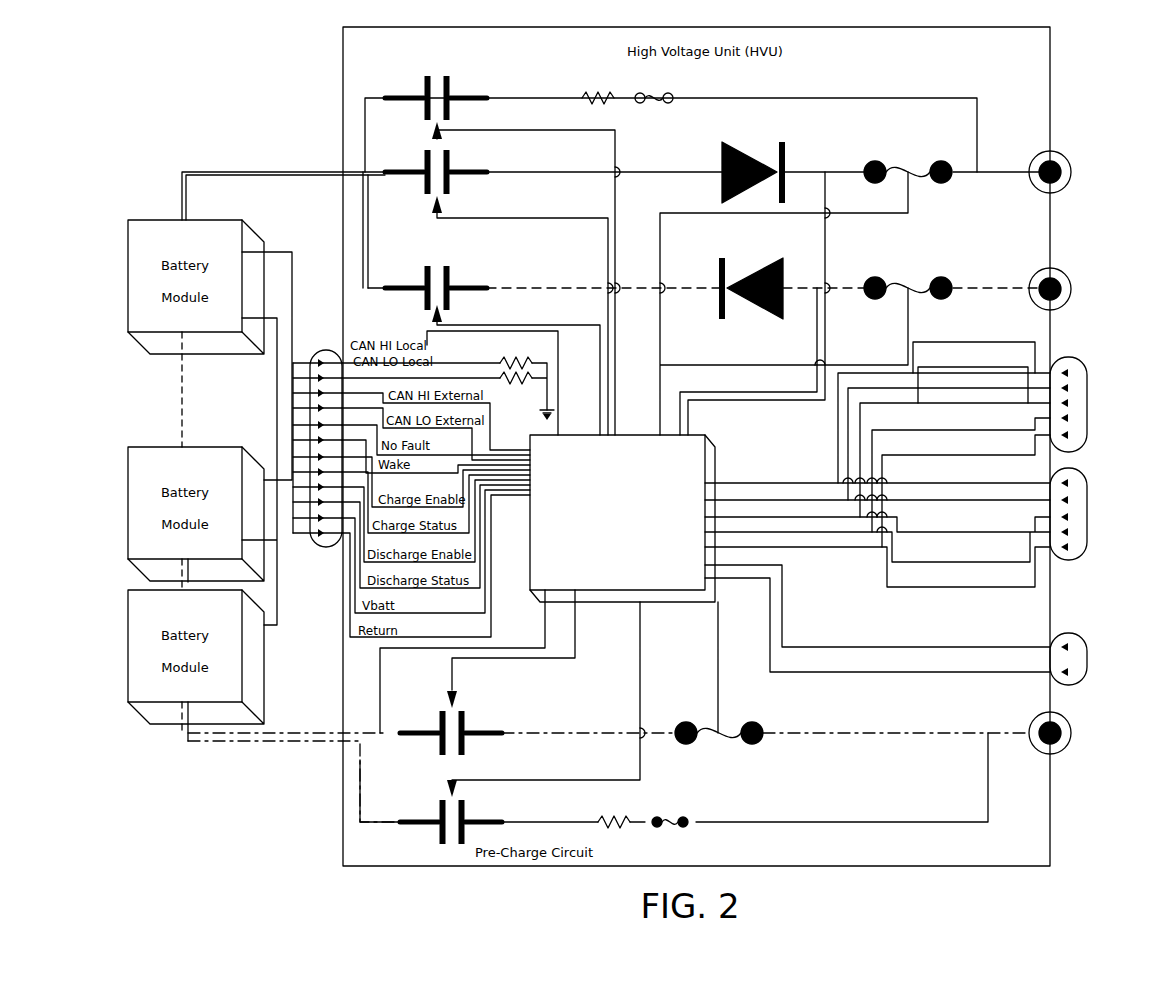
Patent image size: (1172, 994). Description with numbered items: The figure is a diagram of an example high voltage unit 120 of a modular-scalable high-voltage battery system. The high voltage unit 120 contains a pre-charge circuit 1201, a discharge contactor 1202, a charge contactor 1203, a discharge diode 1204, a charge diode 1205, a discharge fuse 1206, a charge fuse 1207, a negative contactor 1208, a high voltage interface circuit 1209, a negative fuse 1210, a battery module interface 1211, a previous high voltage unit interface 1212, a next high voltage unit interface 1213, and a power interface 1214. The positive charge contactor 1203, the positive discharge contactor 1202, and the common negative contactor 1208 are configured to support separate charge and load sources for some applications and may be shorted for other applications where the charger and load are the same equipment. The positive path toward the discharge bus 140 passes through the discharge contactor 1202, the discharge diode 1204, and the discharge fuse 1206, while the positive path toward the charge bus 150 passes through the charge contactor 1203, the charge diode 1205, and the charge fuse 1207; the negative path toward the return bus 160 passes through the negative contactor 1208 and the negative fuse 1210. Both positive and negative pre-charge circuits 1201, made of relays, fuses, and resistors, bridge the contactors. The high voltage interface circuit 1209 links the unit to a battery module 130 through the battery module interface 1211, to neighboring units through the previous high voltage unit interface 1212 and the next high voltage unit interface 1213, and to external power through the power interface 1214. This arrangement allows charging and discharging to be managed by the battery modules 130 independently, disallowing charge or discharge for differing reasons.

The high voltage unit 120 is at (203, 110).
The battery module 130 is at (128, 272).
The discharge bus 140 is at (1065, 190).
The charge bus 150 is at (1065, 305).
The return bus 160 is at (1065, 750).
The pre-charge circuit 1201 is at (427, 88).
The discharge contactor 1202 is at (450, 182).
The charge contactor 1203 is at (450, 297).
The discharge diode 1204 is at (722, 178).
The charge diode 1205 is at (760, 310).
The discharge fuse 1206 is at (953, 180).
The charge fuse 1207 is at (950, 283).
The negative contactor 1208 is at (470, 716).
The high voltage interface circuit 1209 is at (607, 604).
The negative fuse 1210 is at (760, 725).
The battery module interface 1211 is at (325, 556).
The previous high voltage unit interface 1212 is at (1085, 445).
The next high voltage unit interface 1213 is at (1085, 555).
The power interface 1214 is at (1085, 680).